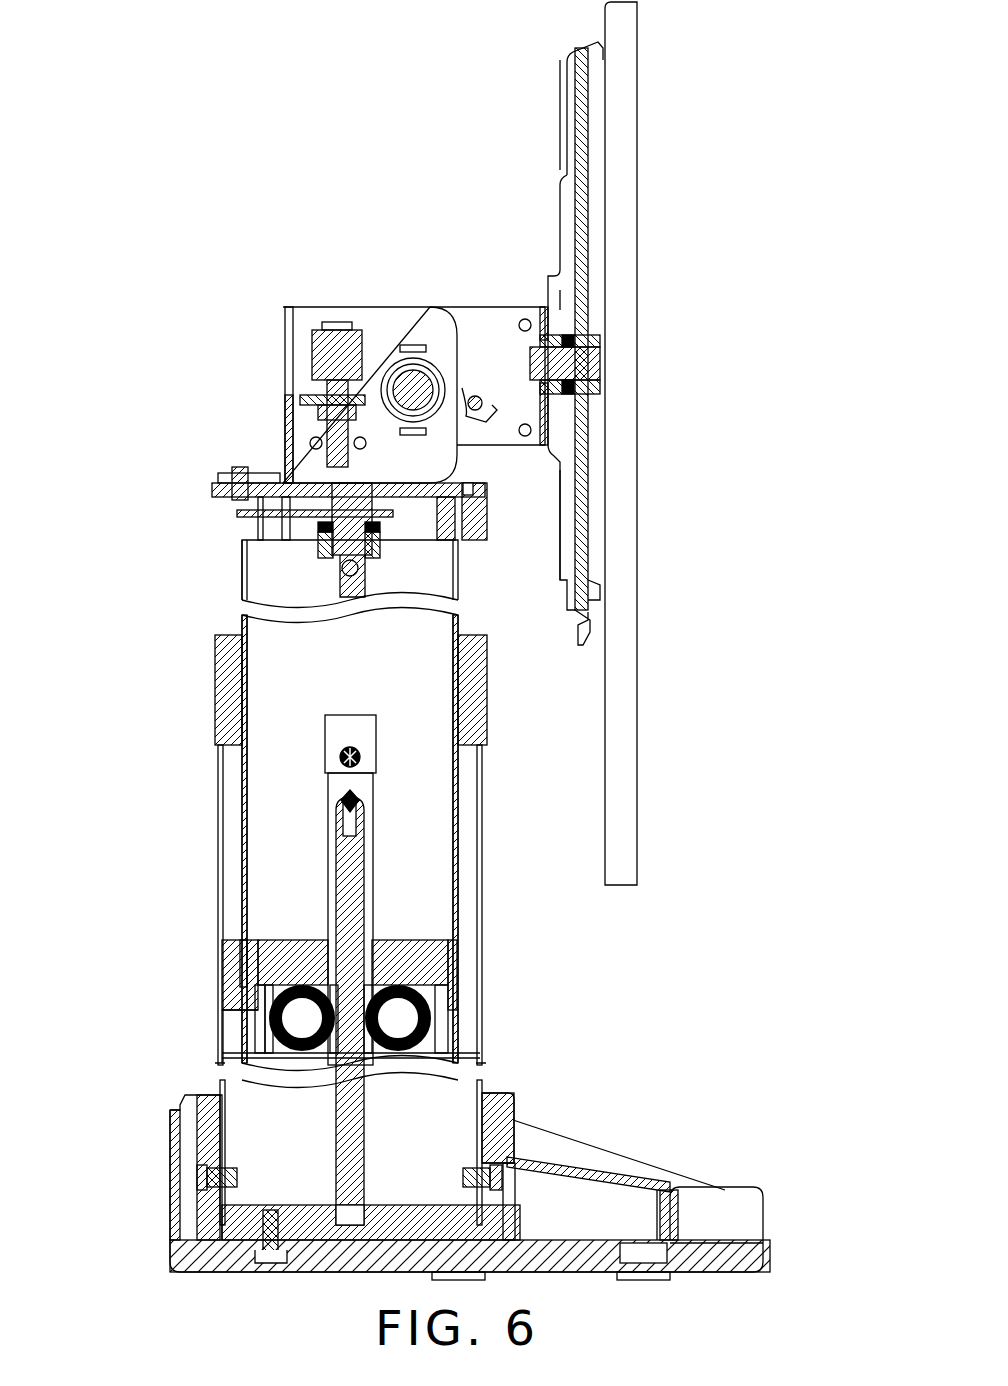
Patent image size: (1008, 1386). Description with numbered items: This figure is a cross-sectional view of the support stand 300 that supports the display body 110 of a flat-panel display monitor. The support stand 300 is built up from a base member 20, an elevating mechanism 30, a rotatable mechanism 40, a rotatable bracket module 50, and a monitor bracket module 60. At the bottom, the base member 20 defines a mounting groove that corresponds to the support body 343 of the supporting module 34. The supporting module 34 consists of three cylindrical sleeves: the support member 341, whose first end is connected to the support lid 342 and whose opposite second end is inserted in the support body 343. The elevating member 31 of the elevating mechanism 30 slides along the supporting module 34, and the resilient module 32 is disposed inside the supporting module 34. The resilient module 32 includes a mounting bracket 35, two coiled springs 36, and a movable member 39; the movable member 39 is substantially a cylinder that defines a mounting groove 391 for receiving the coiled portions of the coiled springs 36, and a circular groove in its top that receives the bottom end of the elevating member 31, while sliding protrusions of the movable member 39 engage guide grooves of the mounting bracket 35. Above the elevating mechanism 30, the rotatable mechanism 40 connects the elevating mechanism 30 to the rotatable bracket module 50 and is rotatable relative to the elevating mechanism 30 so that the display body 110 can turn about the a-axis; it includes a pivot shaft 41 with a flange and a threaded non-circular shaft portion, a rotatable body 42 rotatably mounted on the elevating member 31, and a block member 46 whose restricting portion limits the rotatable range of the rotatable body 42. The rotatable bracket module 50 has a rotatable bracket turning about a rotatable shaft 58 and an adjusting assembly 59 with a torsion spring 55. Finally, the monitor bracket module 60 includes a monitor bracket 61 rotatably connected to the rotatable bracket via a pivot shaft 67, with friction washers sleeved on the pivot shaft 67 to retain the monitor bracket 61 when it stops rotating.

The support stand 300 is at (300, 152).
The display body 110 is at (625, 95).
The monitor bracket module 60 is at (604, 343).
The monitor bracket 61 is at (572, 566).
The pivot shaft 67 is at (602, 360).
The rotatable bracket module 50 is at (379, 347).
The adjusting assembly 59 is at (320, 332).
The rotatable shaft 58 is at (420, 378).
The torsion spring 55 is at (392, 362).
The rotatable mechanism 40 is at (315, 506).
The pivot shaft 41 is at (330, 490).
The block member 46 is at (240, 513).
The rotatable body 42 is at (480, 537).
The elevating mechanism 30 is at (392, 890).
The elevating member 31 is at (462, 590).
The supporting module 34 is at (474, 937).
The support lid 342 is at (482, 732).
The support member 341 is at (482, 925).
The support body 343 is at (498, 1125).
The resilient module 32 is at (280, 1007).
The mounting groove 391 is at (250, 985).
The movable member 39 is at (298, 956).
The coiled springs 36 is at (372, 1048).
The mounting bracket 35 is at (345, 1112).
The base member 20 is at (715, 1205).